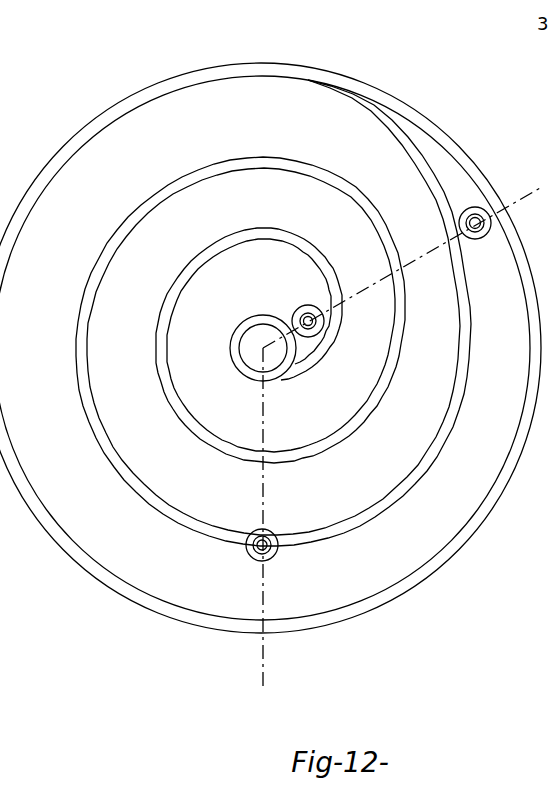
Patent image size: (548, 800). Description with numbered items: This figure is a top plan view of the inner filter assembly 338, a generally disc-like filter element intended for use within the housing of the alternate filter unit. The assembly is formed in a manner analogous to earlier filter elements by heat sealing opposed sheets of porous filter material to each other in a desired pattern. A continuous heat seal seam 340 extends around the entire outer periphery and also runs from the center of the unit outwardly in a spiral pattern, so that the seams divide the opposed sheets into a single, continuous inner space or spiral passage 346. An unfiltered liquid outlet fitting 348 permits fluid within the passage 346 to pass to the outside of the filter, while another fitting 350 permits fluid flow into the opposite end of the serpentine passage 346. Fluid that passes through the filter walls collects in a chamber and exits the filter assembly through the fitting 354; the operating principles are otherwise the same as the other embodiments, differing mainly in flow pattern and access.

The inner filter assembly 338 is at (363, 68).
The heat seal seam 340 is at (306, 446).
The spiral passage 346 is at (212, 580).
The unfiltered liquid outlet fitting 348 is at (476, 207).
The fitting 350 is at (303, 306).
The fitting 354 is at (269, 554).